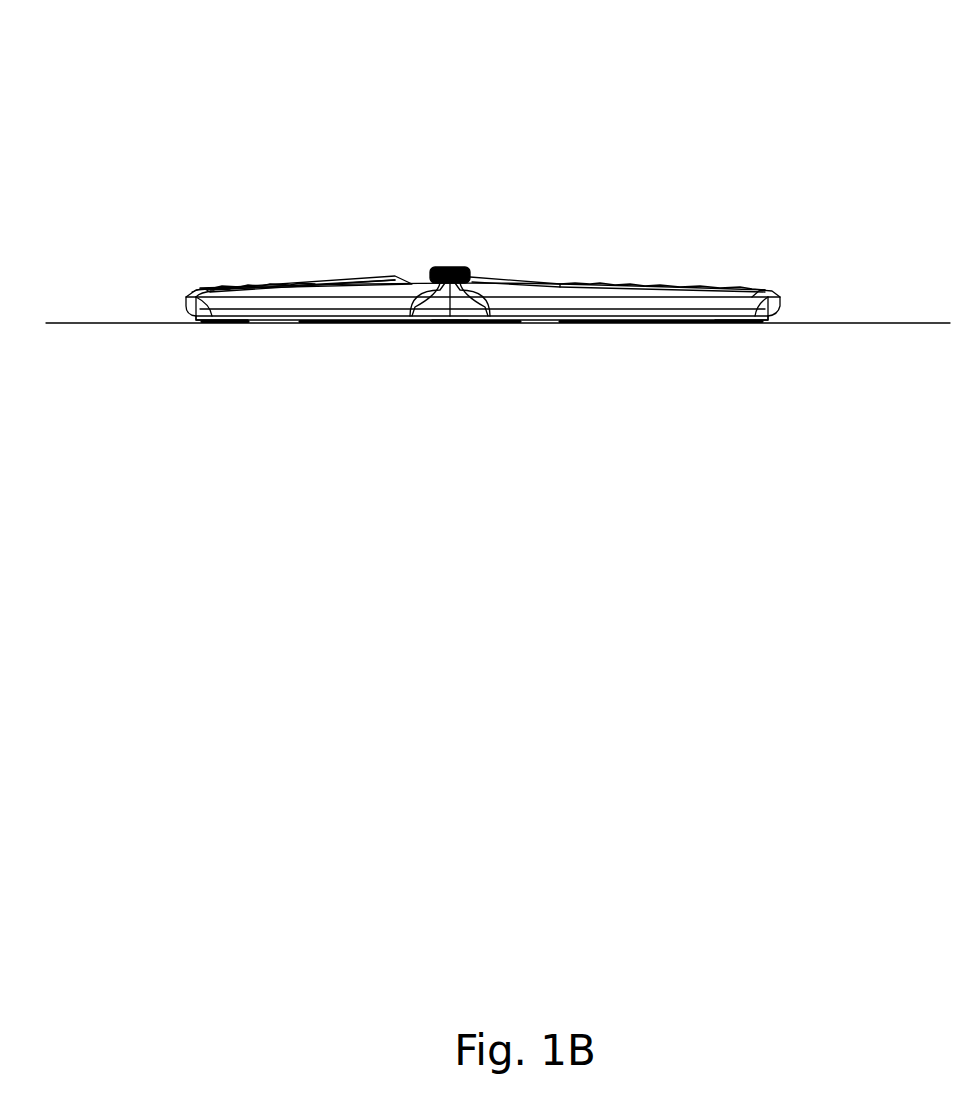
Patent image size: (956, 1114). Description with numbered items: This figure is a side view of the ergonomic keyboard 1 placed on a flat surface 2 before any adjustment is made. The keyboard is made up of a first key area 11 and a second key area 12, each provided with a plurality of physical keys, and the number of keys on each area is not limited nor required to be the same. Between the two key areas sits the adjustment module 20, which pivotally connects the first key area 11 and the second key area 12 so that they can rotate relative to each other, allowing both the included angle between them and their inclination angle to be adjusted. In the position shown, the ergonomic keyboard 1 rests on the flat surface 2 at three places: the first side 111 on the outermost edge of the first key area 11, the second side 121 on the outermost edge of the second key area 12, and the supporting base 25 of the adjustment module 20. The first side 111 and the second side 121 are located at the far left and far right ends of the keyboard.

The ergonomic keyboard 1 is at (789, 92).
The flat surface 2 is at (104, 323).
The first key area 11 is at (608, 284).
The second key area 12 is at (306, 284).
The adjustment module 20 is at (450, 267).
The supporting base 25 is at (447, 325).
The first side 111 is at (773, 326).
The second side 121 is at (182, 325).